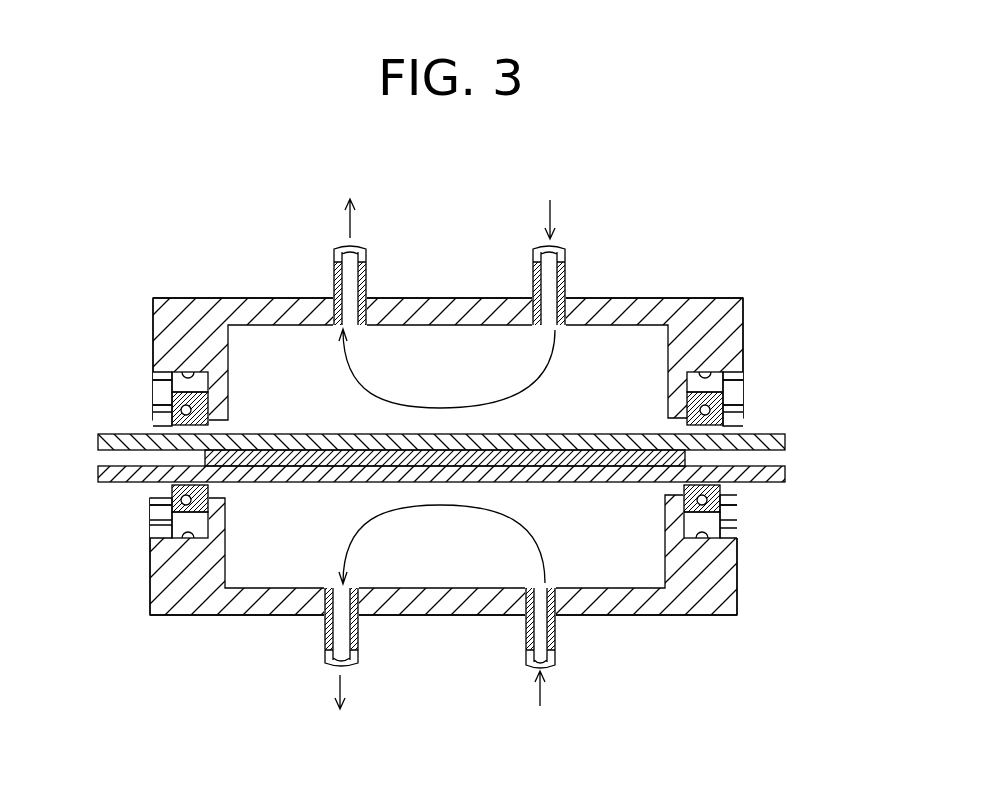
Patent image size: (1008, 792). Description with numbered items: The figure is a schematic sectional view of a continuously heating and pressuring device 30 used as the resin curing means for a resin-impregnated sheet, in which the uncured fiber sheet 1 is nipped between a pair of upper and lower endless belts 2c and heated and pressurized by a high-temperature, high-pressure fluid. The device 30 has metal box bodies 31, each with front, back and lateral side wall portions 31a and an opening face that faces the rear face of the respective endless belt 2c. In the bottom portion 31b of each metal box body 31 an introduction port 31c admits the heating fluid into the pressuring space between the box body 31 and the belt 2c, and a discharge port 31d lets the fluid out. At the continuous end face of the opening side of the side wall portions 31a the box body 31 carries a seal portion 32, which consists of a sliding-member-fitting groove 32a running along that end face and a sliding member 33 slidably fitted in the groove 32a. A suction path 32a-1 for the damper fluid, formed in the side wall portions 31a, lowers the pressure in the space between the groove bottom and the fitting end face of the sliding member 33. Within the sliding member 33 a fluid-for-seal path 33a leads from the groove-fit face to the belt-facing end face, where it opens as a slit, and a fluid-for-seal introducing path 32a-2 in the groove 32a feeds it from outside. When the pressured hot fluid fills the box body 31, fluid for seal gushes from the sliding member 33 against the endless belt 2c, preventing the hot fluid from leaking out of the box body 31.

The continuously heating and pressuring device 30 is at (682, 272).
The metal box body 31 is at (745, 318).
The side wall portions 31a is at (730, 350).
The bottom portion 31b is at (633, 312).
The introduction port 31c is at (548, 285).
The discharge port 31d is at (353, 287).
The seal portion 32 is at (449, 462).
The sliding-member-fitting groove 32a is at (441, 462).
The suction path for fluid for damper 32a-1 is at (152, 380).
The fluid-for-seal introducing path 32a-2 is at (152, 405).
The sliding member 33 is at (210, 388).
The fluid-for-seal path 33a is at (210, 418).
The substrate 1 is at (568, 436).
The endless belt 2c is at (787, 440).